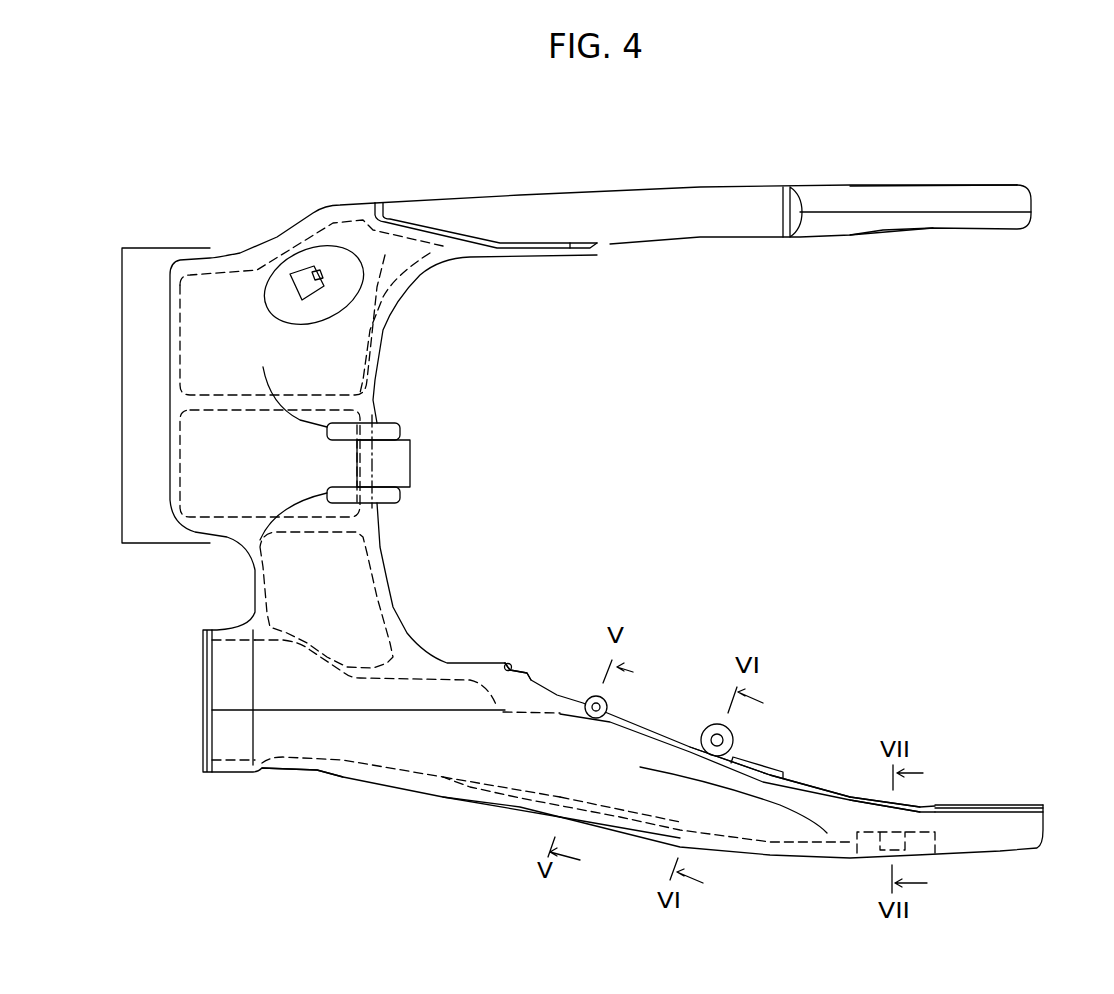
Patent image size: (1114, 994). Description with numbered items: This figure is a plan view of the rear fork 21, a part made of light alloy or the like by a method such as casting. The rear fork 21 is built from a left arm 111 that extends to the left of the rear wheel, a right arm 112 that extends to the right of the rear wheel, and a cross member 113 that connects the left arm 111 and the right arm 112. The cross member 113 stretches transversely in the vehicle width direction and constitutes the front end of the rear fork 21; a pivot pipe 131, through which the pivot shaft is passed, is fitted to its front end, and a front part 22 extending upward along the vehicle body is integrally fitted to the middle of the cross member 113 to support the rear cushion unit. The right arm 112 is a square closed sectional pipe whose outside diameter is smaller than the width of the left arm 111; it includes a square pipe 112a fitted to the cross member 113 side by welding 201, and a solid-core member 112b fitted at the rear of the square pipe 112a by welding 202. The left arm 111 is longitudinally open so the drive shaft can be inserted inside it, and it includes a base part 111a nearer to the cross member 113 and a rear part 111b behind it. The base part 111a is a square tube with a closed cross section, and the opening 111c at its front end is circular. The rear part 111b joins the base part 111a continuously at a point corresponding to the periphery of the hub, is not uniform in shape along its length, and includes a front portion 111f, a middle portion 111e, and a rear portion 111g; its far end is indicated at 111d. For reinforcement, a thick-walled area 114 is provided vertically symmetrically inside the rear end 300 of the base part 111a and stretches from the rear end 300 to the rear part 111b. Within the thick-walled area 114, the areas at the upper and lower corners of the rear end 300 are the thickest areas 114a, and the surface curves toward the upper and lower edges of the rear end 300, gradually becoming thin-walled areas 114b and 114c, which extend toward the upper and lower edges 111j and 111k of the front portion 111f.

The rear fork 21 is at (645, 175).
The front part 22 is at (400, 462).
The left arm 111 is at (395, 785).
The base part 111a is at (317, 773).
The rear part 111b is at (942, 575).
The opening 111c is at (203, 687).
The rear end portion 111d is at (930, 807).
The middle portion 111e is at (740, 753).
The front portion 111f is at (618, 705).
The rear portion 111g is at (873, 787).
The upper edge 111j is at (532, 700).
The lower edge 111k is at (602, 857).
The right arm 112 is at (450, 197).
The square pipe 112a is at (748, 197).
The solid-core member 112b is at (866, 200).
The cross member 113 is at (225, 333).
The thick-walled area 114 is at (510, 668).
The thickest areas 114a is at (505, 670).
The thin-walled area 114b is at (510, 713).
The thin-walled area 114c is at (489, 840).
The pivot pipe 131 is at (122, 330).
The welding 201 is at (378, 203).
The welding 202 is at (790, 188).
The rear end 300 is at (505, 663).